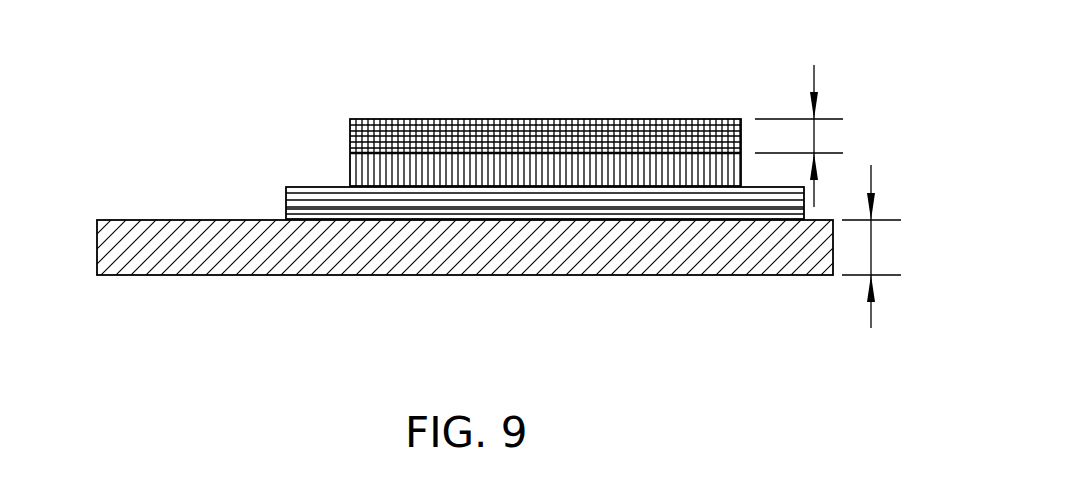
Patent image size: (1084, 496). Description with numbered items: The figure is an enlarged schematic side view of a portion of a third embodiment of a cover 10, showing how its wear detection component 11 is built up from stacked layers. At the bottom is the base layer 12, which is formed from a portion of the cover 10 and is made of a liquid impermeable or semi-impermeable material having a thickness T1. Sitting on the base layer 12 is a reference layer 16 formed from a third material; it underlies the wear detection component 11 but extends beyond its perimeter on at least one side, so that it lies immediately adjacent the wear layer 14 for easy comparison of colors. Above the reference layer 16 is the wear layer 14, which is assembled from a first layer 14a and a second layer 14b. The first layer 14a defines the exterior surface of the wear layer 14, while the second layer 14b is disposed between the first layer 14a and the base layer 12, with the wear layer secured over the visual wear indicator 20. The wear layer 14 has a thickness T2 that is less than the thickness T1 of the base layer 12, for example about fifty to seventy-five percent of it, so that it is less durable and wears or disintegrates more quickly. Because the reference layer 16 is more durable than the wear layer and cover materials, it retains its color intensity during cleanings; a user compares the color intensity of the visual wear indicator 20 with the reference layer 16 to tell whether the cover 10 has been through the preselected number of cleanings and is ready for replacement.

The cover 10 is at (137, 288).
The wear detection component 11 is at (557, 115).
The base layer 12 is at (187, 237).
The wear layer 14 is at (338, 119).
The first layer 14a is at (433, 140).
The second layer 14b is at (412, 178).
The reference layer 16 is at (315, 203).
The visual wear indicator 20 is at (652, 153).
The thickness of base layer T1 is at (871, 248).
The thickness of wear layer T2 is at (814, 137).